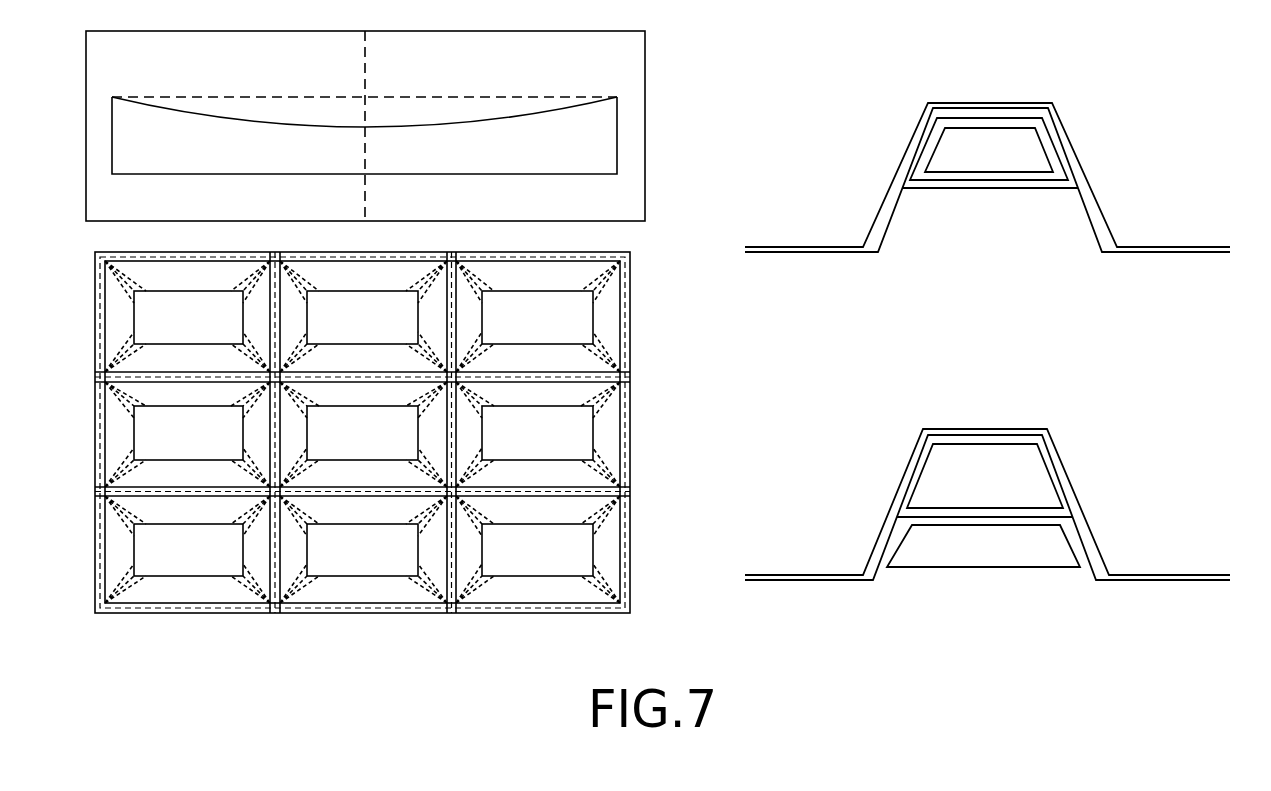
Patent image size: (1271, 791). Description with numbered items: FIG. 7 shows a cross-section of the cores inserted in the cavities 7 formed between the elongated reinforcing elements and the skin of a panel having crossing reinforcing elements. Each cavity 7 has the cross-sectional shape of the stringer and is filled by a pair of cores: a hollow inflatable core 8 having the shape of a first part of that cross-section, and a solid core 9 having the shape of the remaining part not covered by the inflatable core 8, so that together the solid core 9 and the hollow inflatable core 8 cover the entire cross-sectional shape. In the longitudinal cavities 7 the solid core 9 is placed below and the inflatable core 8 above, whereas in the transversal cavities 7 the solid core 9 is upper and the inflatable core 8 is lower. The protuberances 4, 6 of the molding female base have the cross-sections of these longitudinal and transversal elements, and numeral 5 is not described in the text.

The longitudinal protuberance 4 is at (1075, 502).
The reinforcing profile (second variant) 5 is at (987, 581).
The transversal protuberance 6 is at (890, 187).
The cavity 7 is at (987, 250).
The hollow inflatable core 8 is at (1042, 233).
The solid core 9 is at (1030, 152).